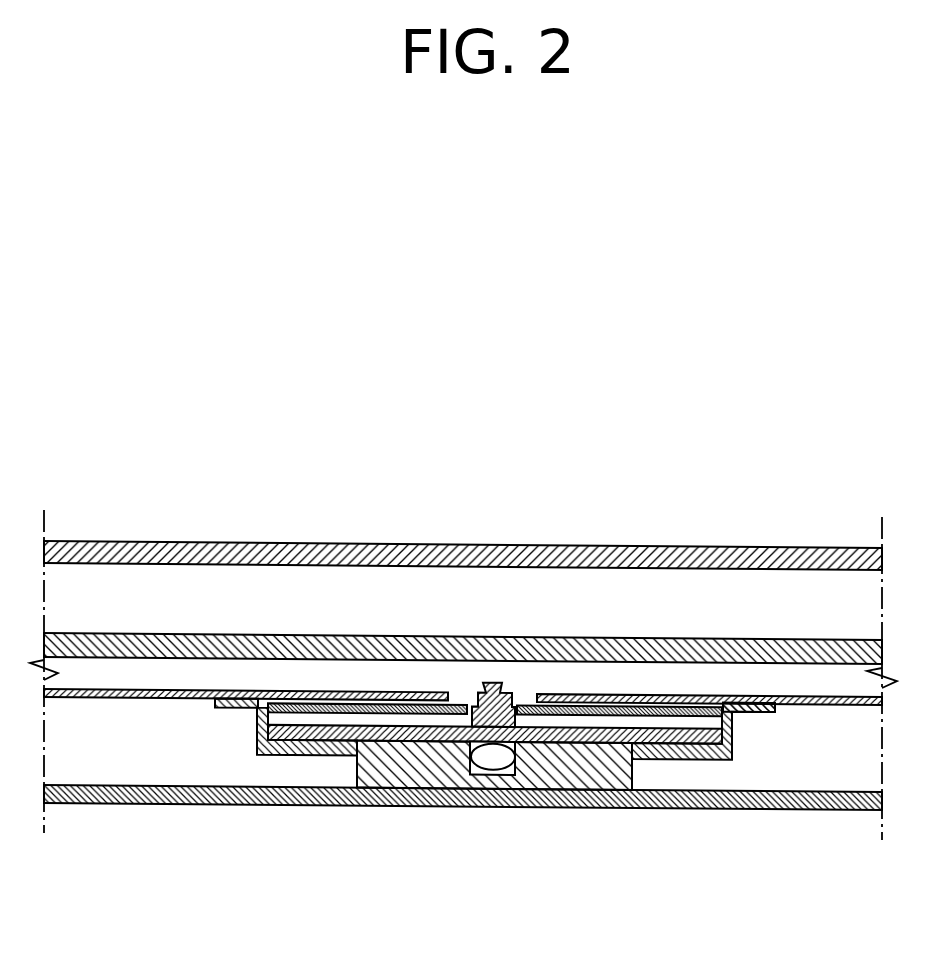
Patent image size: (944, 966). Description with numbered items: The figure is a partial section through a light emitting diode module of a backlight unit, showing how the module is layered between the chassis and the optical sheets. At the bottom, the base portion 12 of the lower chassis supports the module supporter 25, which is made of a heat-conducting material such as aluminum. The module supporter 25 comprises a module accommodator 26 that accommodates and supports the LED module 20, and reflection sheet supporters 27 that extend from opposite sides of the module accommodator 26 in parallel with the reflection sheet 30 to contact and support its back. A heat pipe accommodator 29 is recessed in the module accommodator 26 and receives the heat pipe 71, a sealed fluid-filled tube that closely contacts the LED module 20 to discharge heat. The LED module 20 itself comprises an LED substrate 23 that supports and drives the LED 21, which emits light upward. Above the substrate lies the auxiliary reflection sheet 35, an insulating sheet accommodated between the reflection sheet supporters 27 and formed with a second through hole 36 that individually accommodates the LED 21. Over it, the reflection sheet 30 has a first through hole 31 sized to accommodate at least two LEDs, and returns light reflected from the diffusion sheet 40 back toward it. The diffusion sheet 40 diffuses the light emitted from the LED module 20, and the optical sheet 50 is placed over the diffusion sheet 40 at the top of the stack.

The base portion 12 is at (133, 803).
The LED module 20 is at (623, 590).
The LED 21 is at (492, 679).
The LED substrate 23 is at (600, 723).
The module supporter 25 is at (566, 819).
The module accommodator 26 is at (625, 742).
The reflection sheet supporter 27 is at (749, 798).
The heat pipe accommodator 29 is at (500, 771).
The reflection sheet 30 is at (285, 689).
The first through hole 31 is at (457, 723).
The auxiliary reflection sheet 35 is at (343, 701).
The second through hole 36 is at (473, 700).
The diffusion sheet 40 is at (197, 633).
The optical sheet 50 is at (110, 541).
The heat pipe 71 is at (494, 761).